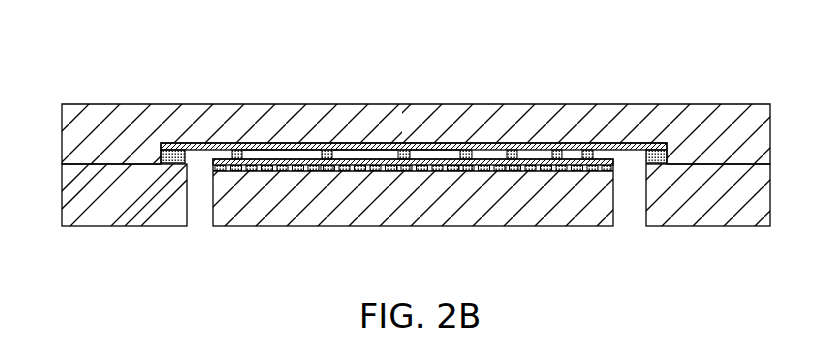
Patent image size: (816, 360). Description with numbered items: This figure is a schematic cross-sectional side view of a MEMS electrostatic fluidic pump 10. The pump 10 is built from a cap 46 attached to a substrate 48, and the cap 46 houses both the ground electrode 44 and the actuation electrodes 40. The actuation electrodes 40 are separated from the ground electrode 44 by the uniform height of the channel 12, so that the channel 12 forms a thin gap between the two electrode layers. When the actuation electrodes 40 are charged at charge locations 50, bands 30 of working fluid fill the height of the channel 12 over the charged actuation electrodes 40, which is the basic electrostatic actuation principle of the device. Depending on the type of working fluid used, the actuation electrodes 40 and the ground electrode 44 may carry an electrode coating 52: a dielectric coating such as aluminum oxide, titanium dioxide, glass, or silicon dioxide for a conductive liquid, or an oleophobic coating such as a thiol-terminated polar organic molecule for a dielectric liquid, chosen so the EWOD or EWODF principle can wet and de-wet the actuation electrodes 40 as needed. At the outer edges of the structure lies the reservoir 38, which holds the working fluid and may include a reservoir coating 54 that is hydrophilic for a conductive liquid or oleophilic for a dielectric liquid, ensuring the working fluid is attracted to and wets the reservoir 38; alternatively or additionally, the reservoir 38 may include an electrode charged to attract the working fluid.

The pump 10 is at (681, 36).
The channel 12 is at (540, 157).
The bands 30 is at (463, 150).
The reservoir 38 is at (644, 146).
The actuation electrodes 40 is at (252, 170).
The ground electrode 44 is at (281, 148).
The cap 46 is at (725, 137).
The substrate 48 is at (703, 188).
The charge locations 50 is at (322, 170).
The electrode coating 52 is at (253, 158).
The reservoir coating 54 is at (157, 156).